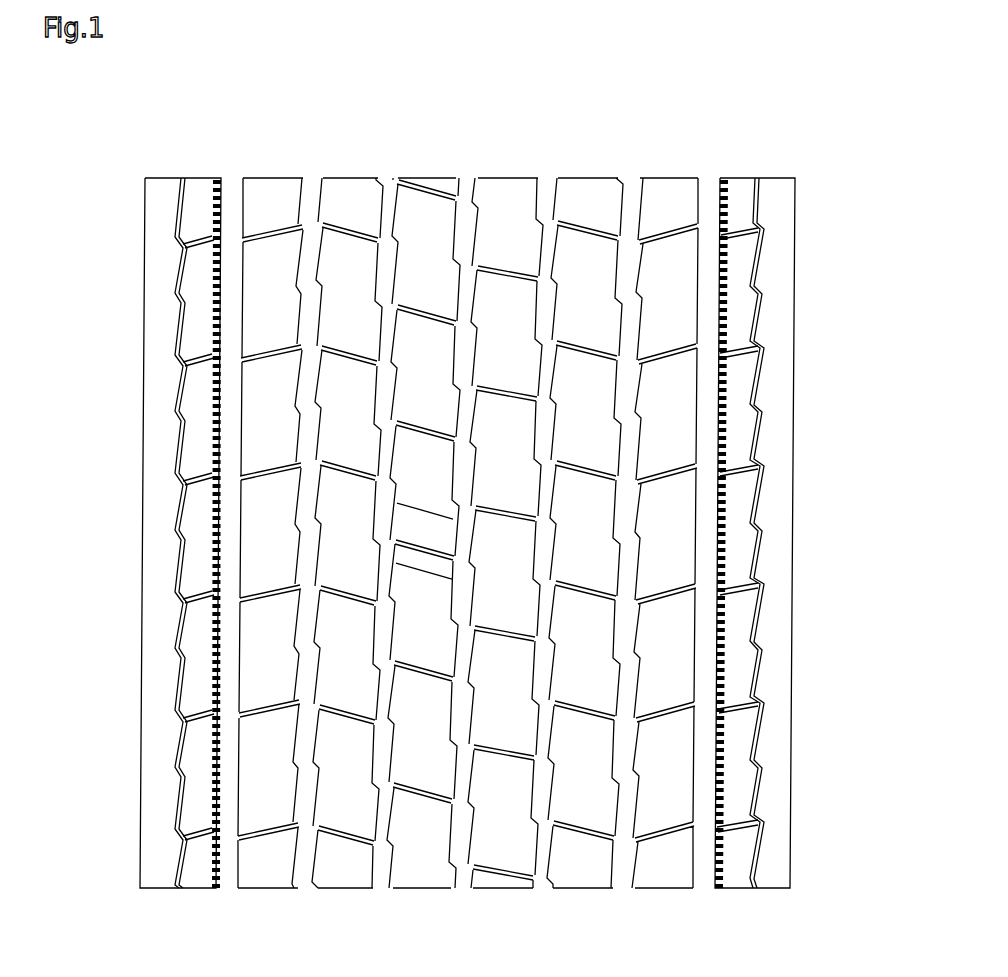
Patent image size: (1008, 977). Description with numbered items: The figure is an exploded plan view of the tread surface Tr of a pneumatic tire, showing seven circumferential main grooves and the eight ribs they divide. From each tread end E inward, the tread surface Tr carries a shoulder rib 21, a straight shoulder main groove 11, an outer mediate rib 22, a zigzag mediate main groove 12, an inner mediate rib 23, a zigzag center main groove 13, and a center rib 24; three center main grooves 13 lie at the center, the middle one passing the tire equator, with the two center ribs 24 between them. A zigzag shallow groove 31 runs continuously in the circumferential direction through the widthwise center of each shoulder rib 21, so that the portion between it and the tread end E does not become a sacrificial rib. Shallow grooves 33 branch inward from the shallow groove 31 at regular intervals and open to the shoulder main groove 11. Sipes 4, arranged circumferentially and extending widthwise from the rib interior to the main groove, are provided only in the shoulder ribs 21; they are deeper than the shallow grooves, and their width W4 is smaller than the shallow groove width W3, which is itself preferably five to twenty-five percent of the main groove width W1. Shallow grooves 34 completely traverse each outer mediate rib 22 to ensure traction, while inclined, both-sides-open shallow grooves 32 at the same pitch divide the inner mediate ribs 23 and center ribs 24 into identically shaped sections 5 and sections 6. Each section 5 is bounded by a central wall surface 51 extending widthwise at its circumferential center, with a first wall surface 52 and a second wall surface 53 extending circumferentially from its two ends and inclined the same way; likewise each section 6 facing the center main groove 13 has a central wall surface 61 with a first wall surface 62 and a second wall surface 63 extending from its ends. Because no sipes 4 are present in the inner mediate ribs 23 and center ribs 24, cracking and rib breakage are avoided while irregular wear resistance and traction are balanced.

The shoulder rib 21 is at (163, 178).
The outer mediate rib 22 is at (269, 178).
The inner mediate rib 23 is at (350, 178).
The center rib 24 is at (433, 178).
The sipe 4 is at (215, 678).
The shallow groove (first shallow groove) 31 is at (178, 380).
The shallow groove (second shallow groove) 32 is at (347, 240).
The shallow groove (third shallow groove) 33 is at (195, 594).
The shallow groove 34 is at (270, 357).
The section 5 is at (357, 674).
The section 6 is at (437, 631).
The central wall surface 51 is at (382, 430).
The wall surface (first wall surface) 52 is at (378, 578).
The wall surface (second wall surface) 53 is at (376, 516).
The central wall surface 61 is at (402, 480).
The wall surface (first wall surface) 62 is at (399, 568).
The wall surface (second wall surface) 63 is at (399, 508).
The shoulder main groove 11 is at (227, 890).
The mediate main groove 12 is at (307, 890).
The center main groove 13 is at (384, 890).
The tread end E is at (143, 770).
The tread surface Tr is at (112, 278).
The width of the main groove W1 is at (418, 163).
The width of the shallow grooves W3 is at (205, 450).
The width of the sipe W4 is at (218, 775).